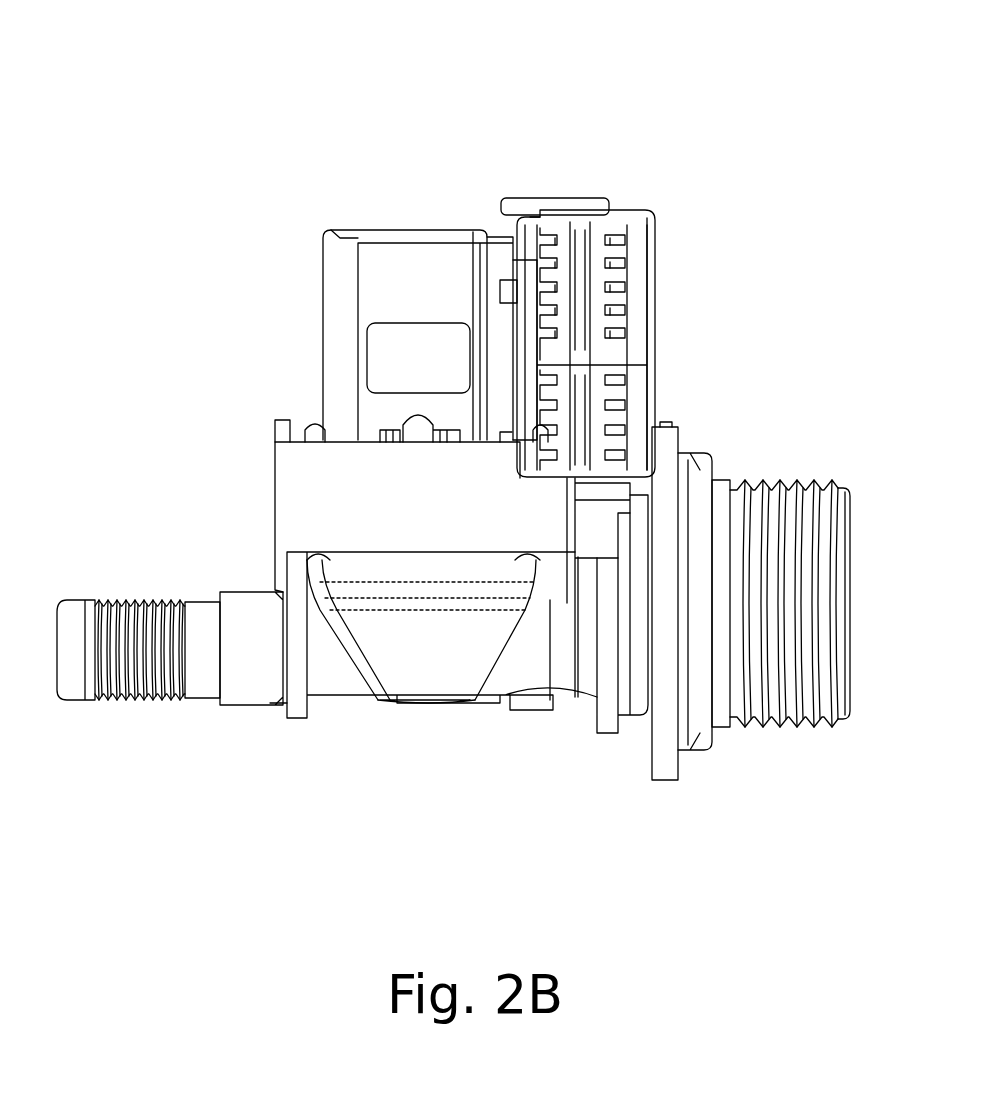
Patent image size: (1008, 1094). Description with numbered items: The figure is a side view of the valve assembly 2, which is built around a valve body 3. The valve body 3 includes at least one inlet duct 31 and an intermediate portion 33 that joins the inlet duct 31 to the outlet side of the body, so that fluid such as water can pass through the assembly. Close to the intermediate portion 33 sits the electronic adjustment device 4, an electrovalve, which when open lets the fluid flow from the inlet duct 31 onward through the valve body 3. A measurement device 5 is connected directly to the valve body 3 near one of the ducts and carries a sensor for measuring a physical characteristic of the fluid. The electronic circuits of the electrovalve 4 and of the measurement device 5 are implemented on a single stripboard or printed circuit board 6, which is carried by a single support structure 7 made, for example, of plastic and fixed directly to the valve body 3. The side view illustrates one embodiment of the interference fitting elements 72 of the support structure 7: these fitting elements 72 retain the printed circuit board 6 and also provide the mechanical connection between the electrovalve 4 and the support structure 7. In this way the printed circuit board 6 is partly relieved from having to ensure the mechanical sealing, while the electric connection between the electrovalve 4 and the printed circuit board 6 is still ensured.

The valve assembly 2 is at (257, 98).
The valve body 3 is at (352, 832).
The electronic adjustment device 4 is at (276, 250).
The measurement device 5 is at (694, 406).
The printed circuit board 6 is at (578, 258).
The support structure 7 is at (633, 212).
The inlet duct 31 is at (834, 454).
The intermediate portion 33 is at (496, 756).
The interference fitting elements 72 is at (508, 200).